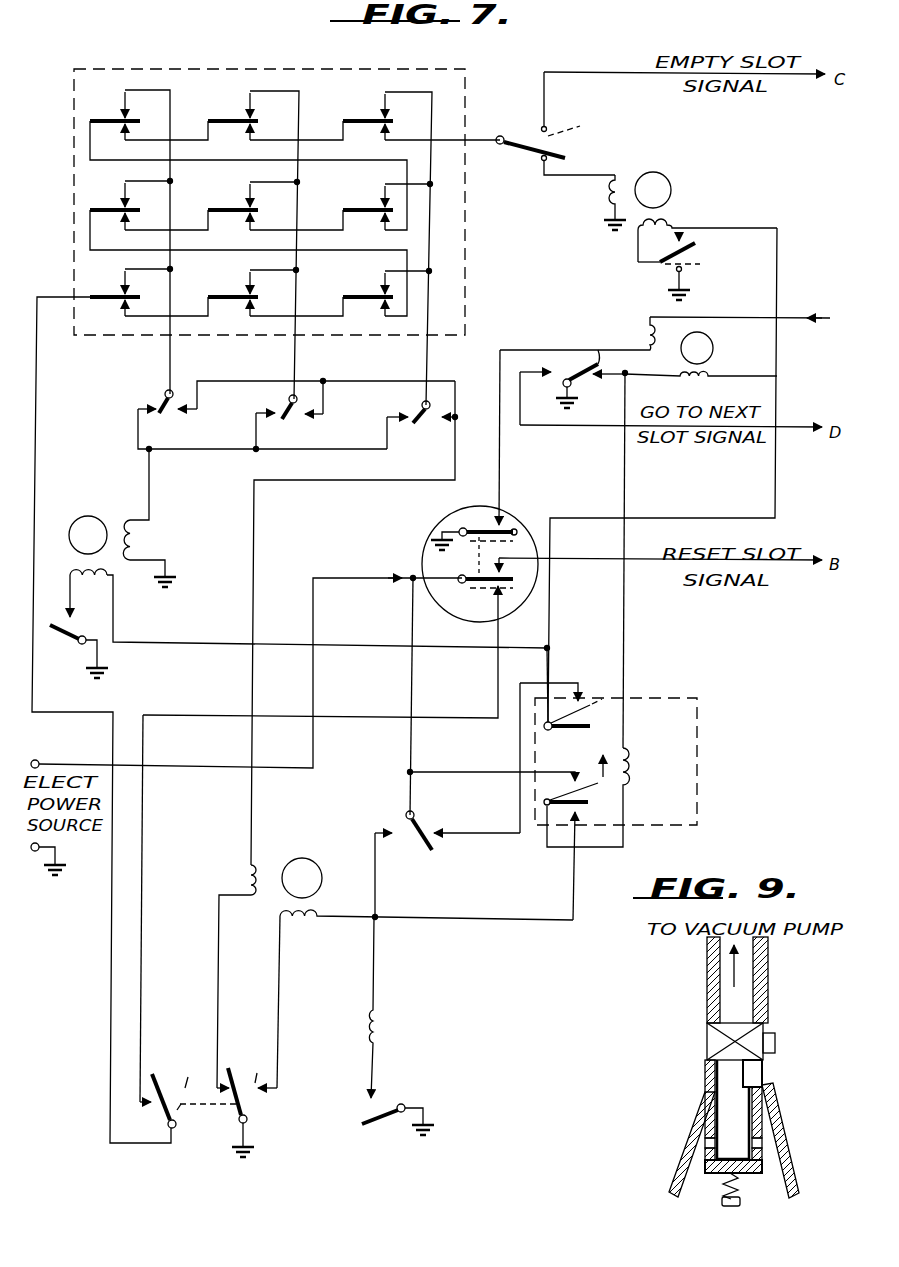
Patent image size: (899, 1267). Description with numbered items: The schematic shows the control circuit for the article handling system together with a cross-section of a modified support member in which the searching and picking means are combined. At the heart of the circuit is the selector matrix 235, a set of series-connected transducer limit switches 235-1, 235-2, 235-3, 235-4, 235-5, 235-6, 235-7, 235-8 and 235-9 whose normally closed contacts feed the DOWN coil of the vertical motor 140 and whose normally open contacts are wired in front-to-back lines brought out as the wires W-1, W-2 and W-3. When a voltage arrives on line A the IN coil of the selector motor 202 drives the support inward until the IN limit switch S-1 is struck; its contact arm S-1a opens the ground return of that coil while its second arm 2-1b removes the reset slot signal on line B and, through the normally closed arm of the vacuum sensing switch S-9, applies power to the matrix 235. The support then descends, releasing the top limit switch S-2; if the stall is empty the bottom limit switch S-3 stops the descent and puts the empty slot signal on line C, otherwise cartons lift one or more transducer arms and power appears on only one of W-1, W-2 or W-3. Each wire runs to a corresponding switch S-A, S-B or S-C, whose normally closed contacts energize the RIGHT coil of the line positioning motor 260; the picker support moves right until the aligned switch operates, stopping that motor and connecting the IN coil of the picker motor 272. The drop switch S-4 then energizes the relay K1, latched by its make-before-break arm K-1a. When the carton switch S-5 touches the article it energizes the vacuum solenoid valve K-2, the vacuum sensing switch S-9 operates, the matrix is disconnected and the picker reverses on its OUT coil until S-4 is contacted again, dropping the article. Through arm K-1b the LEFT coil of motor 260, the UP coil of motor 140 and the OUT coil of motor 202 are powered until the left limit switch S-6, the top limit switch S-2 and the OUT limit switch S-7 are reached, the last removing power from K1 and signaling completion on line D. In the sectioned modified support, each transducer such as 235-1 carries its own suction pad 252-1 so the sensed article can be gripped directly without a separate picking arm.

In FIG. 7, the selector matrix 235 is at (466, 285).
In FIG. 7, the transducer member 235-1 is at (112, 292).
In FIG. 9, the transducer member 235-1 is at (722, 1203).
In FIG. 7, the transducer member 235-2 is at (243, 288).
In FIG. 7, the transducer member 235-3 is at (372, 293).
In FIG. 7, the transducer member 235-4 is at (114, 205).
In FIG. 7, the transducer member 235-5 is at (243, 203).
In FIG. 7, the transducer member 235-6 is at (378, 206).
In FIG. 7, the transducer member 235-7 is at (120, 115).
In FIG. 7, the transducer member 235-8 is at (246, 116).
In FIG. 7, the transducer member 235-9 is at (380, 120).
In FIG. 7, the vertical motor 140 is at (663, 213).
In FIG. 7, the selector motor 202 is at (709, 356).
In FIG. 7, the line positioning motor 260 is at (101, 545).
In FIG. 7, the picker motor 272 is at (314, 887).
In FIG. 7, the IN limit switch S-1 is at (420, 544).
In FIG. 7, the contact arm S-1a is at (503, 530).
In FIG. 7, the contact arm 2-1b is at (490, 592).
In FIG. 7, the top limit switch S-2 is at (704, 274).
In FIG. 7, the bottom limit switch S-3 is at (580, 123).
In FIG. 7, the drop switch S-4 is at (447, 863).
In FIG. 7, the carton switch S-5 is at (396, 1143).
In FIG. 7, the left limit switch S-6 is at (145, 640).
In FIG. 7, the OUT limit switch S-7 is at (552, 368).
In FIG. 7, the vacuum sensing switch S-9 is at (215, 1088).
In FIG. 9, the vacuum sensing switch S-9 is at (755, 1075).
In FIG. 7, the switch S-A is at (296, 415).
In FIG. 7, the switch S-B is at (289, 415).
In FIG. 7, the switch S-C is at (354, 623).
In FIG. 7, the wire W-1 is at (168, 357).
In FIG. 7, the wire W-2 is at (287, 357).
In FIG. 7, the wire W-3 is at (414, 357).
In FIG. 7, the relay K1 is at (553, 783).
In FIG. 7, the contact arm K-1a is at (558, 807).
In FIG. 7, the contact arm K-1b is at (561, 740).
In FIG. 7, the vacuum solenoid valve K-2 is at (440, 1008).
In FIG. 9, the suction pad 252-1 is at (670, 1182).